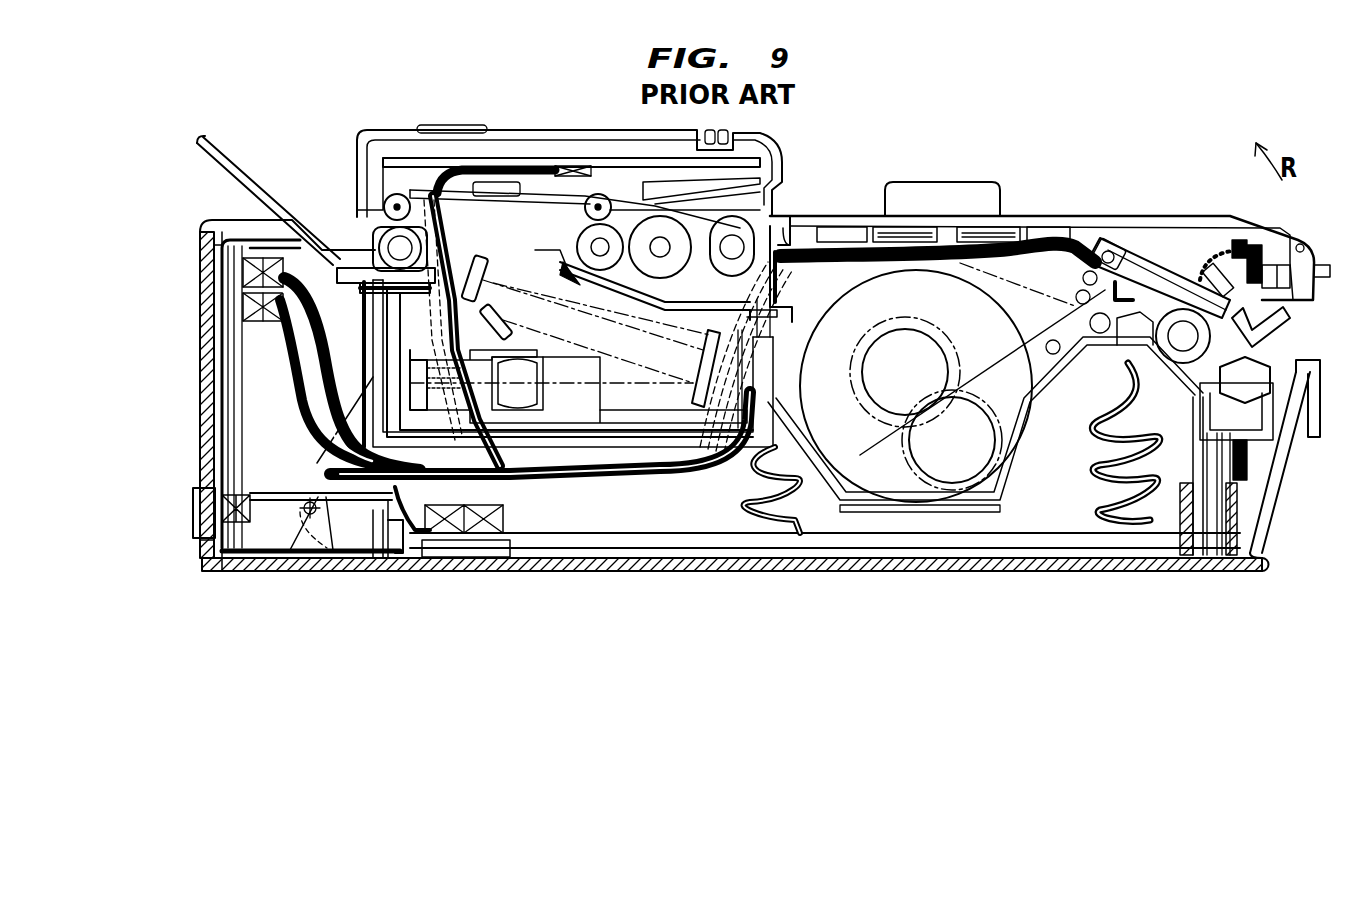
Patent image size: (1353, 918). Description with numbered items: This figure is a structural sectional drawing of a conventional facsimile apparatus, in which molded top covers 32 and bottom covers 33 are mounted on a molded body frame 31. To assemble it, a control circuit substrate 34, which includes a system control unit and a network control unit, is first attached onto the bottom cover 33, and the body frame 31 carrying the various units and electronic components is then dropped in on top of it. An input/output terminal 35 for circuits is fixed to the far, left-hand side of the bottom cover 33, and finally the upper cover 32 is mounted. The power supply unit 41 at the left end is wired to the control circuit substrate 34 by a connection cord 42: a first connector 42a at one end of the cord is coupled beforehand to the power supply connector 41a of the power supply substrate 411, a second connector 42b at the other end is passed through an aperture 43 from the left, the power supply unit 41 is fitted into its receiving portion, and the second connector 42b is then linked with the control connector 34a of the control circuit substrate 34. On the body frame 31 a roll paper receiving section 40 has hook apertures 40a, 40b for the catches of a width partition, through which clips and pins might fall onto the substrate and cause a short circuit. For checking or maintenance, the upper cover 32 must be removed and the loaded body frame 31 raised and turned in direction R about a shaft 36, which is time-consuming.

The body frame 31 is at (867, 505).
The top cover 32 is at (1122, 216).
The bottom cover 33 is at (690, 568).
The control circuit substrate 34 is at (612, 548).
The control connector 34a is at (463, 548).
The input/output terminal 35 is at (192, 518).
The shaft 36 is at (320, 560).
The roll paper receiving section 40 is at (1015, 502).
The hook aperture 40a is at (893, 505).
The hook aperture 40b is at (970, 510).
The power supply unit 41 is at (250, 432).
The power supply connector 41a is at (232, 251).
The power supply substrate 411 is at (238, 398).
The connection cord 42 is at (322, 328).
The first connector 42a is at (333, 262).
The second connector 42b is at (513, 560).
The aperture 43 is at (378, 503).